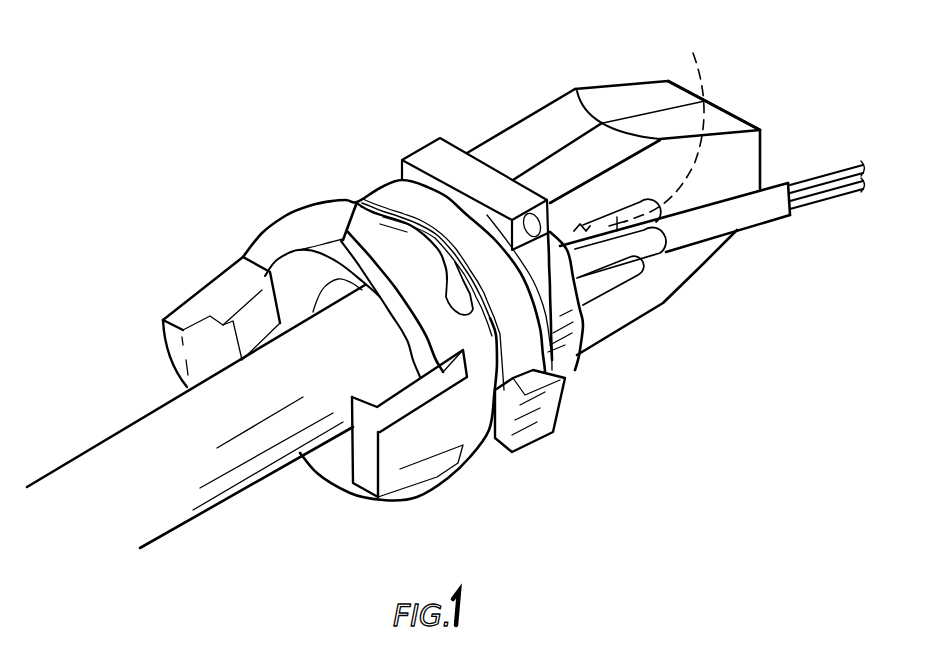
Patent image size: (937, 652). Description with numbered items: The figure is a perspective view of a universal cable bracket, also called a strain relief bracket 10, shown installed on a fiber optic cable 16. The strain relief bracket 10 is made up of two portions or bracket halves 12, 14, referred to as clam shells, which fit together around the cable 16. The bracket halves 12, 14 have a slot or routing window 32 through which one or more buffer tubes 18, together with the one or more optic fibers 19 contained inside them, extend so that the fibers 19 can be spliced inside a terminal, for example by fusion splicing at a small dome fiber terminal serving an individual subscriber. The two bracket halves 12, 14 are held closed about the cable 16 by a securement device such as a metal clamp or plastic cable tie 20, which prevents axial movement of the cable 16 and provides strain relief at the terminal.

The strain relief bracket 10 is at (248, 90).
The bracket half 12 is at (562, 127).
The bracket half 14 is at (723, 115).
The fiber optic cable 16 is at (156, 480).
The buffer tube 18 is at (753, 213).
The optic fiber 19 is at (843, 173).
The cable tie 20 is at (583, 422).
The routing window 32 is at (657, 128).